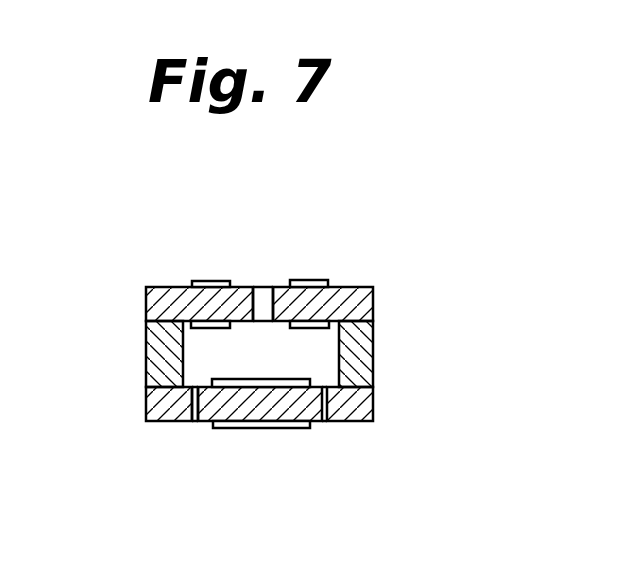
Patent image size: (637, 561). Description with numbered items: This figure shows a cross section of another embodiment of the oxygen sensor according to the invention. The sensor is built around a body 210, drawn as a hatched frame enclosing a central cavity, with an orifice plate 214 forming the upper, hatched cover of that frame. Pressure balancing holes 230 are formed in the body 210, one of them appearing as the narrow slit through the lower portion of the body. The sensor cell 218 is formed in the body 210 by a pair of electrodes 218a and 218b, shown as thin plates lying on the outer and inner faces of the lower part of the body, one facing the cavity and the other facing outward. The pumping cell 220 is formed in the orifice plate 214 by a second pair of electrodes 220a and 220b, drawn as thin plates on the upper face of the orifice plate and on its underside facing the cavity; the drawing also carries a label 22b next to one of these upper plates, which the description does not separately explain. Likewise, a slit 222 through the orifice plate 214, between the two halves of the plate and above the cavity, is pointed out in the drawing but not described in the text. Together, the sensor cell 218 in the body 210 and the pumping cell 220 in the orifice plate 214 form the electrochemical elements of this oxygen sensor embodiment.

The body 210 is at (362, 412).
The orifice plate 214 is at (374, 292).
The sensor cell 218 is at (375, 493).
The electrode 218a is at (268, 429).
The electrode 218b is at (252, 378).
The pumping cell 220 is at (260, 230).
The electrode 220a is at (203, 329).
The electrode 220b is at (320, 281).
The outer upper electrode (left) 22b is at (213, 282).
The slit in top body 222 is at (263, 287).
The pressure balancing holes 230 is at (194, 423).